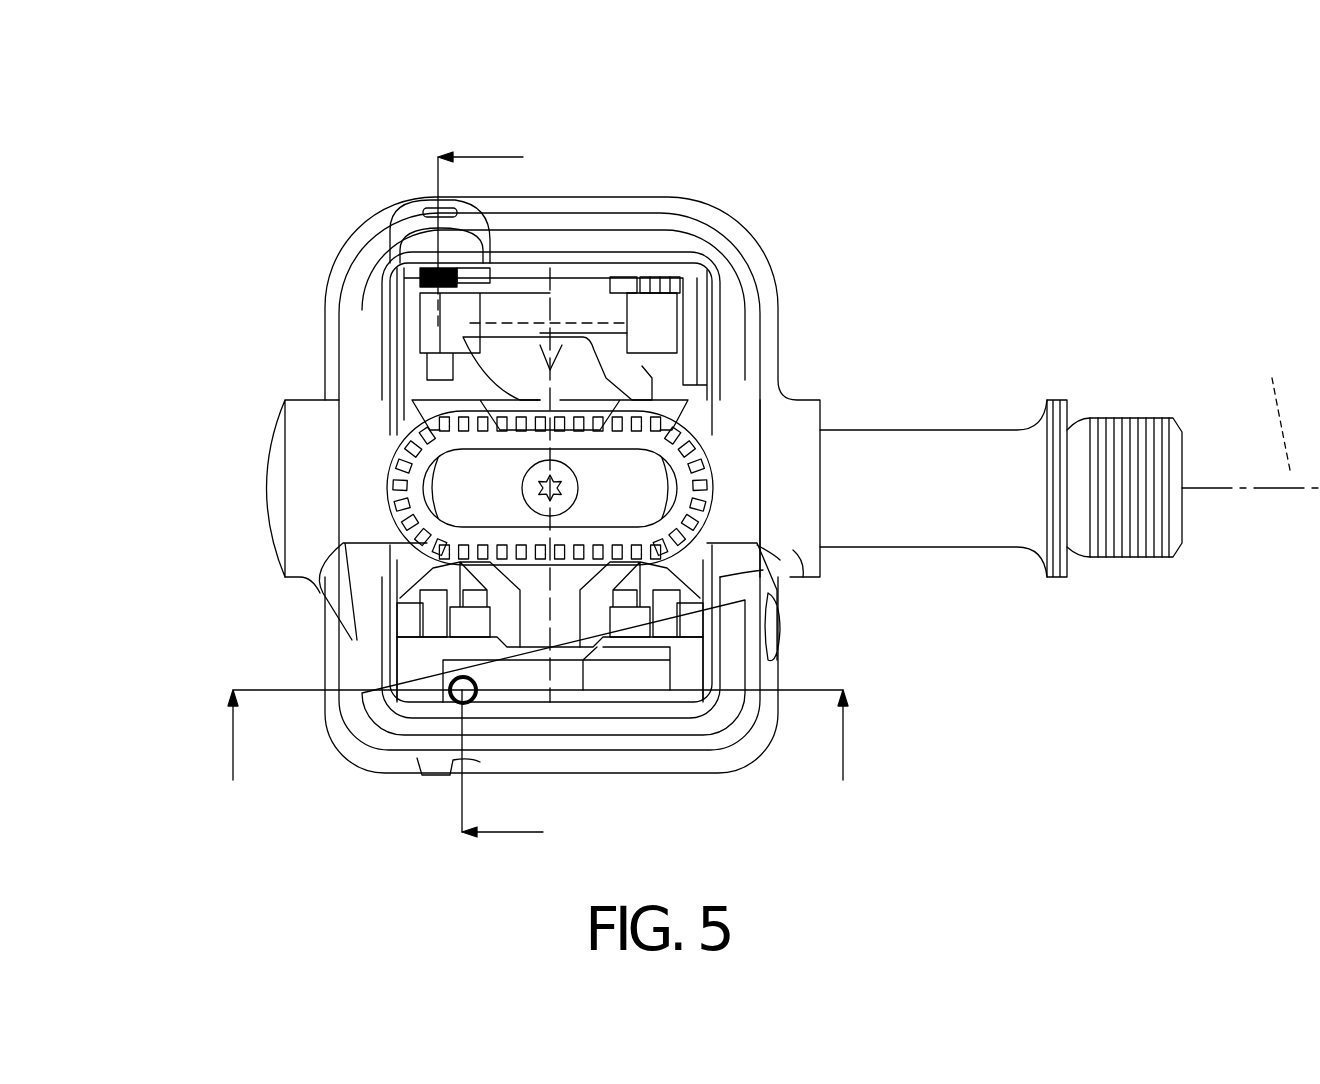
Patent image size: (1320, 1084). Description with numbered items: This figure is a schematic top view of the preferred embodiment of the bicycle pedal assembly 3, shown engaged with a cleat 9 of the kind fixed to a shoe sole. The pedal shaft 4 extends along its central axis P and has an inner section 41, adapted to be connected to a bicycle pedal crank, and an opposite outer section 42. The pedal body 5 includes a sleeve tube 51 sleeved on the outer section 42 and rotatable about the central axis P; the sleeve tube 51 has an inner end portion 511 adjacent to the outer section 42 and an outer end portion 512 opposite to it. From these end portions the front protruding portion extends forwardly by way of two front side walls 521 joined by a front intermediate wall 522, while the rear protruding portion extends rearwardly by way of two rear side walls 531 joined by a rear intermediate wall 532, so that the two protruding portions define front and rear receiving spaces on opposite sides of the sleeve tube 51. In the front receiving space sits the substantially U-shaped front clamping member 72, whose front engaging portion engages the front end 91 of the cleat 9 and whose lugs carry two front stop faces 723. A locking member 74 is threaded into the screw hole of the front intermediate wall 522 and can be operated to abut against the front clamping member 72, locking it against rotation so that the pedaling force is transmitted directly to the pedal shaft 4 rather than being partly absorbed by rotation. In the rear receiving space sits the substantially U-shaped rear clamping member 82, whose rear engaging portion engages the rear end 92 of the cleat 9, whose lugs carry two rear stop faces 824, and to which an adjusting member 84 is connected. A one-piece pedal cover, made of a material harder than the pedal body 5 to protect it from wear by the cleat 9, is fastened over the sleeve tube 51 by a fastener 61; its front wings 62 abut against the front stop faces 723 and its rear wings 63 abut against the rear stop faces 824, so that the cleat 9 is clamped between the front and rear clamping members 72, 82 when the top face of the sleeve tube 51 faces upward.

The bicycle pedal assembly 3 is at (305, 198).
The pedal shaft 4 is at (1070, 423).
The inner section 41 is at (1135, 433).
The outer section 42 is at (880, 443).
The pedal body 5 is at (745, 188).
The sleeve tube 51 is at (347, 457).
The inner end portion 511 is at (782, 478).
The outer end portion 512 is at (307, 460).
The front side walls 521 is at (363, 290).
The front intermediate wall 522 is at (621, 210).
The rear side walls 531 is at (337, 657).
The rear intermediate wall 532 is at (700, 745).
The fastener 61 is at (567, 493).
The front wings 62 is at (400, 395).
The rear wings 63 is at (413, 580).
The front clamping member 72 is at (517, 310).
The front stop faces 723 is at (682, 400).
The locking member 74 is at (430, 265).
The rear clamping member 82 is at (598, 673).
The rear stop faces 824 is at (710, 583).
The adjusting member 84 is at (432, 705).
The cleat 9 is at (467, 498).
The front end 91 is at (520, 378).
The rear end 92 is at (510, 620).
The central axis P is at (1272, 400).